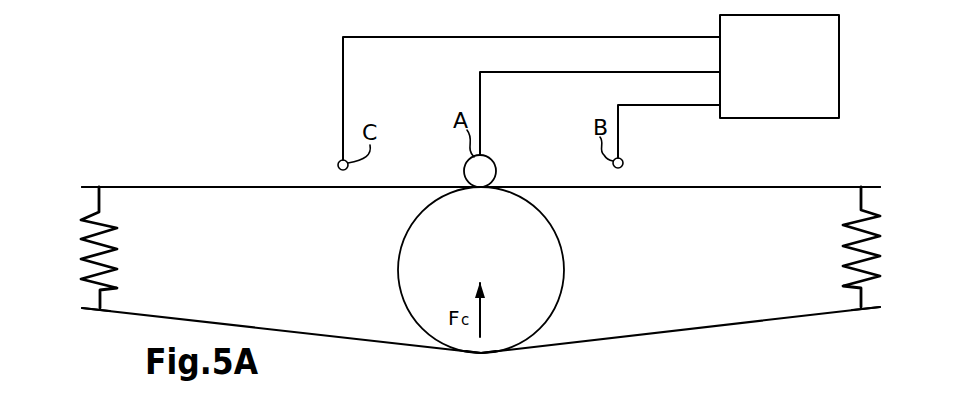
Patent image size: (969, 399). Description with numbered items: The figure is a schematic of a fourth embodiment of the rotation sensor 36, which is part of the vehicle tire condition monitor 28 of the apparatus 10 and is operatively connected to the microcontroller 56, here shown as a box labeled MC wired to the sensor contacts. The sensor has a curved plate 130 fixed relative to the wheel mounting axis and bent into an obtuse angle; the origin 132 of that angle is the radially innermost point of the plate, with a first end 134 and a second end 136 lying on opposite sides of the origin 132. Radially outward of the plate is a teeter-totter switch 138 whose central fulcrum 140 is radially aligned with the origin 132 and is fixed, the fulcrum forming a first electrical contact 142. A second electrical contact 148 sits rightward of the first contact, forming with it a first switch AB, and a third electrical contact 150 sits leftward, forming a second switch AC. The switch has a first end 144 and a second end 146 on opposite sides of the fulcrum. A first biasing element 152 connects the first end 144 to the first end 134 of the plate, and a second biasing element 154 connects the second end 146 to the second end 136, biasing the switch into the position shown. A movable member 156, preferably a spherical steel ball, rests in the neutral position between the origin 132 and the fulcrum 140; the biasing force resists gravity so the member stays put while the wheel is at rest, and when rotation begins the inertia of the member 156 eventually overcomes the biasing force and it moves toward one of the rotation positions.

The apparatus 10 is at (103, 31).
The vehicle tire condition monitor 28 is at (113, 72).
The rotation sensor 36 is at (106, 125).
The microcontroller 56 is at (840, 68).
The curved plate 130 is at (299, 333).
The origin 132 is at (487, 355).
The first end 134 is at (860, 309).
The second end 136 is at (88, 309).
The teeter-totter switch 138 is at (205, 187).
The central fulcrum 140 is at (484, 172).
The first electrical contact 142 is at (463, 168).
The first end 144 is at (854, 186).
The second end 146 is at (90, 187).
The second electrical contact 148 is at (623, 163).
The third electrical contact 150 is at (338, 164).
The first biasing element 152 is at (845, 240).
The second biasing element 154 is at (116, 262).
The movable member 156 is at (443, 236).